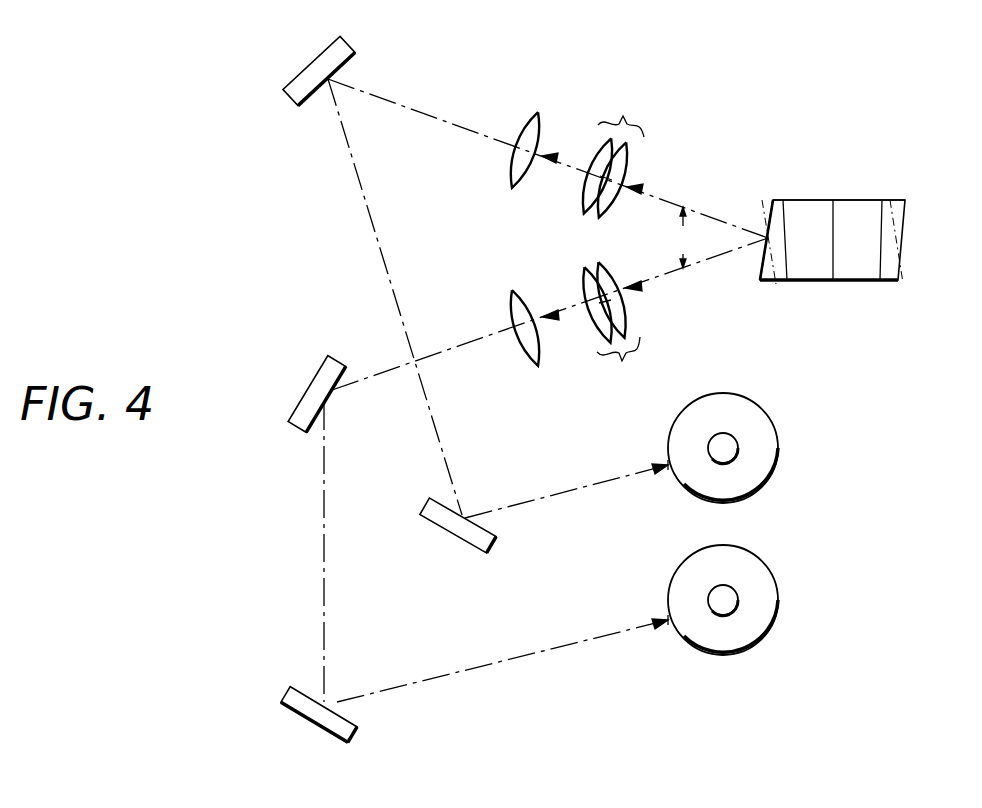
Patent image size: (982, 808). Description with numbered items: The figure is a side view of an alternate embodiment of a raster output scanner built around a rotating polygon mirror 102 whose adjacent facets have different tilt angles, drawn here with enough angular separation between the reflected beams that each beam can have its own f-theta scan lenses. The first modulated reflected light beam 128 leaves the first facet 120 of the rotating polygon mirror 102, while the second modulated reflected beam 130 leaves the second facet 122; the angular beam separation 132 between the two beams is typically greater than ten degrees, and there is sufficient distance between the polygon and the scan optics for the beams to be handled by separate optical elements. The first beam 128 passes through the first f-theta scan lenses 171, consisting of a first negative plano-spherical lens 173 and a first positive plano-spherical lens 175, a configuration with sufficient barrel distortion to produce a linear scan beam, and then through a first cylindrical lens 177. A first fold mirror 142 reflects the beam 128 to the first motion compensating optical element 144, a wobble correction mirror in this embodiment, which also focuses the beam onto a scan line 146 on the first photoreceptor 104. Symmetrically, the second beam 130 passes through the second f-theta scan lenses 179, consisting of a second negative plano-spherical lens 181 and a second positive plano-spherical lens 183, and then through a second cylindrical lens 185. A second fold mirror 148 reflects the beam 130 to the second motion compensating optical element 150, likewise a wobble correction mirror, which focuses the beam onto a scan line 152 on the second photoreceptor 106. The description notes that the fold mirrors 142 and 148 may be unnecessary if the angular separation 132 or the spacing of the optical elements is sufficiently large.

The rotating polygon mirror 102 is at (840, 160).
The first photoreceptor 104 is at (765, 425).
The second photoreceptor 106 is at (765, 572).
The first facet 120 is at (768, 200).
The second facet 122 is at (765, 282).
The first modulated reflected light beam 128 is at (697, 205).
The second modulated reflected beam 130 is at (697, 268).
The angular beam separation 132 is at (682, 237).
The first fold mirror 142 is at (296, 78).
The first motion compensating optical element 144 is at (468, 548).
The scan line 146 is at (667, 466).
The second fold mirror 148 is at (315, 373).
The second motion compensating optical element 150 is at (330, 735).
The scan line 152 is at (667, 622).
The first f-theta scan lenses 171 is at (617, 106).
The first negative plano-spherical lens 173 is at (630, 156).
The first positive plano-spherical lens 175 is at (590, 160).
The first cylindrical lens 177 is at (526, 121).
The second f-theta scan lenses 179 is at (618, 390).
The second negative plano-spherical lens 181 is at (630, 300).
The second positive plano-spherical lens 183 is at (586, 285).
The second cylindrical lens 185 is at (515, 305).